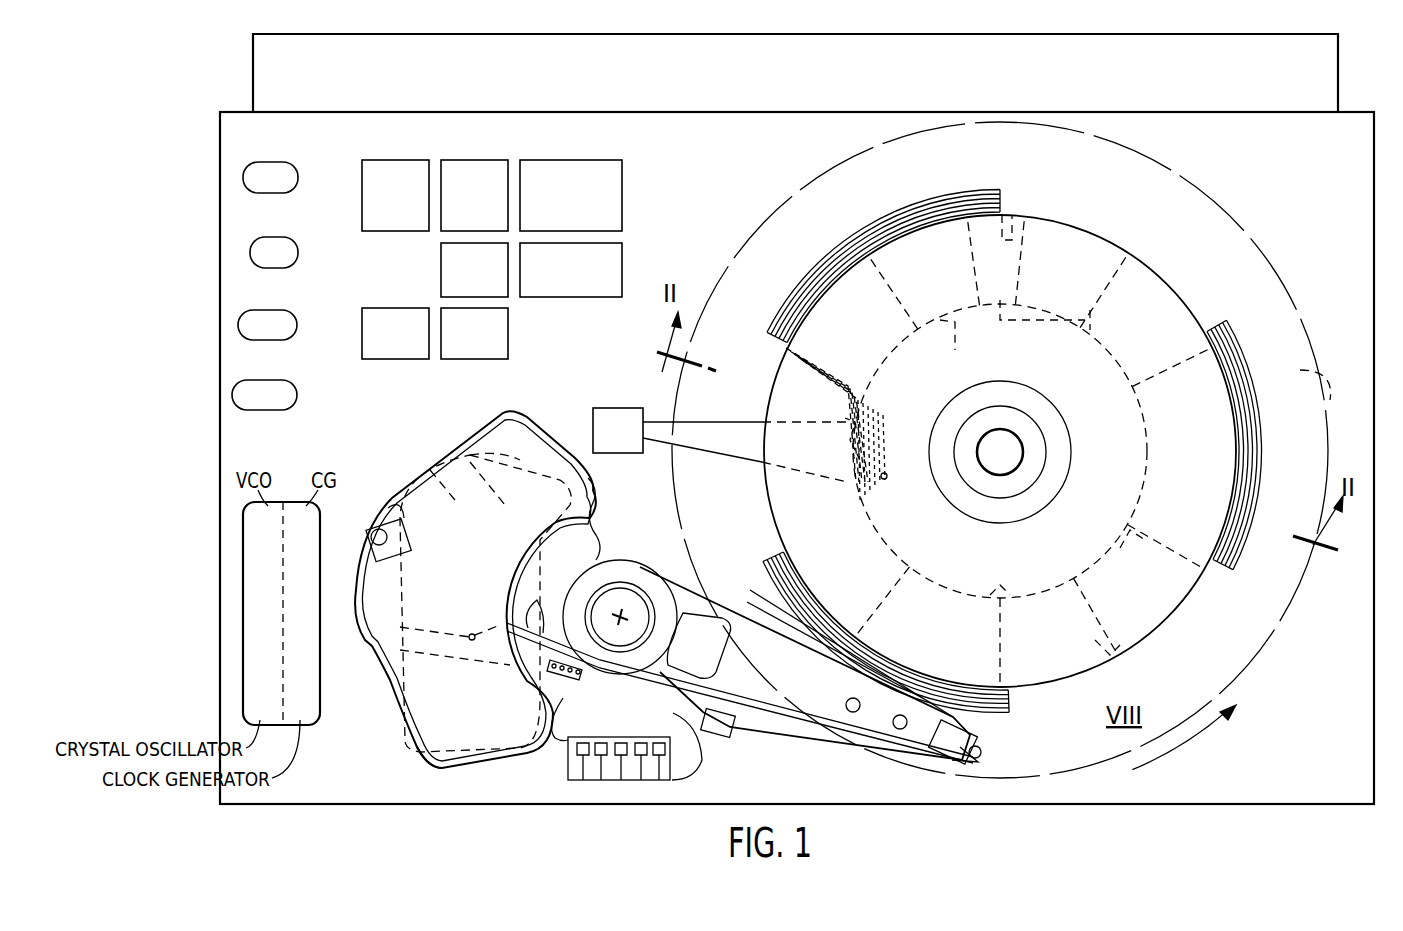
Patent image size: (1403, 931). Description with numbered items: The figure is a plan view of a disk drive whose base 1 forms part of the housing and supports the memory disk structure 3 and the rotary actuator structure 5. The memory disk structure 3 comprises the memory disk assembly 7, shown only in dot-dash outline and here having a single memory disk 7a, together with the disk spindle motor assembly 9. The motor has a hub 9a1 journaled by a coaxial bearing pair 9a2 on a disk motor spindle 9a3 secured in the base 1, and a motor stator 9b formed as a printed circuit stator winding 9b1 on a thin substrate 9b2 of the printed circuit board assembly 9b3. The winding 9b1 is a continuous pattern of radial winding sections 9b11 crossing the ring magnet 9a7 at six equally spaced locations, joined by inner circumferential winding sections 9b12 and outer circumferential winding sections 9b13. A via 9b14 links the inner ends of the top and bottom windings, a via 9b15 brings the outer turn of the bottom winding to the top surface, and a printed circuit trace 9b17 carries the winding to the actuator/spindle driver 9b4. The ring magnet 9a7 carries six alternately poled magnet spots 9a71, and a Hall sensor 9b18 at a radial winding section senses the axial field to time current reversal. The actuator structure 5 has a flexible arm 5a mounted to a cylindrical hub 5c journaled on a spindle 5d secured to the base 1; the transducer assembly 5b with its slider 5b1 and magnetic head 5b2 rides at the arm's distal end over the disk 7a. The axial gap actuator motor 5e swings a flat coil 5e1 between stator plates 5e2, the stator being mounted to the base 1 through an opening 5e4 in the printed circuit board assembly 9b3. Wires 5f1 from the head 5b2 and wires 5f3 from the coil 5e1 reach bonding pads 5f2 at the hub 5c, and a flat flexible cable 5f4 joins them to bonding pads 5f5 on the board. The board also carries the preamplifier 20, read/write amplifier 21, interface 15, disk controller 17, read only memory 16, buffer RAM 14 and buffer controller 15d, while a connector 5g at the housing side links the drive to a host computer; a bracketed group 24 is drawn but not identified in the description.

The base 1 is at (220, 300).
The connector 5g is at (253, 73).
The thin substrate 9b2 is at (902, 116).
The printed circuit board assembly 9b3 is at (1006, 286).
The connector terminals 24 is at (302, 150).
The buffer controller 15d is at (395, 160).
The read/write amplifier 21 is at (479, 160).
The interface circuit 15 is at (642, 190).
The preamplifier 20 is at (441, 283).
The disk controller 17 is at (622, 268).
The read only memory 16 is at (400, 308).
The buffer RAM 14 is at (530, 338).
The memory disk assembly 7 is at (1236, 212).
The memory disk 7a is at (1325, 372).
The memory disk structure 3 is at (1000, 451).
The disk spindle motor assembly 9 is at (1162, 275).
The motor stator 9b is at (1000, 395).
The ring magnet 9a7 is at (952, 350).
The disk motor spindle 9a3 is at (1008, 452).
The coaxial bearing pair 9a2 is at (1037, 460).
The hub 9a1 is at (1052, 481).
The printed circuit stator winding 9b1 is at (975, 195).
The outer circumferential winding sections 9b13 is at (808, 272).
The radial winding sections 9b11 is at (1010, 235).
The Hall sensor 9b18 is at (1220, 328).
The slider 5b1 is at (978, 730).
The actuator/spindle driver 9b4 is at (618, 408).
The printed circuit trace 9b17 is at (732, 422).
The via 9b15 is at (847, 432).
The via 9b14 is at (906, 466).
The inner circumferential winding sections 9b12 is at (1035, 560).
The permanent magnet poles 9a71 is at (1105, 652).
The axial gap actuator motor 5e is at (475, 589).
The stator plates 5e2 is at (470, 460).
The flat coil 5e1 is at (594, 494).
The opening 5e4 is at (412, 757).
The rotary actuator structure 5 is at (588, 556).
The spindle 5d is at (622, 612).
The cylindrical hub 5c is at (678, 600).
The flexible arm 5a is at (815, 732).
The magnetic head 5b2 is at (983, 752).
The transducer assembly 5b is at (987, 762).
The wires 5f1 is at (713, 730).
The wires 5f3 is at (532, 620).
The bonding pads 5f2 is at (619, 745).
The bonding pads 5f5 is at (655, 742).
The flat flexible cable 5f4 is at (695, 772).